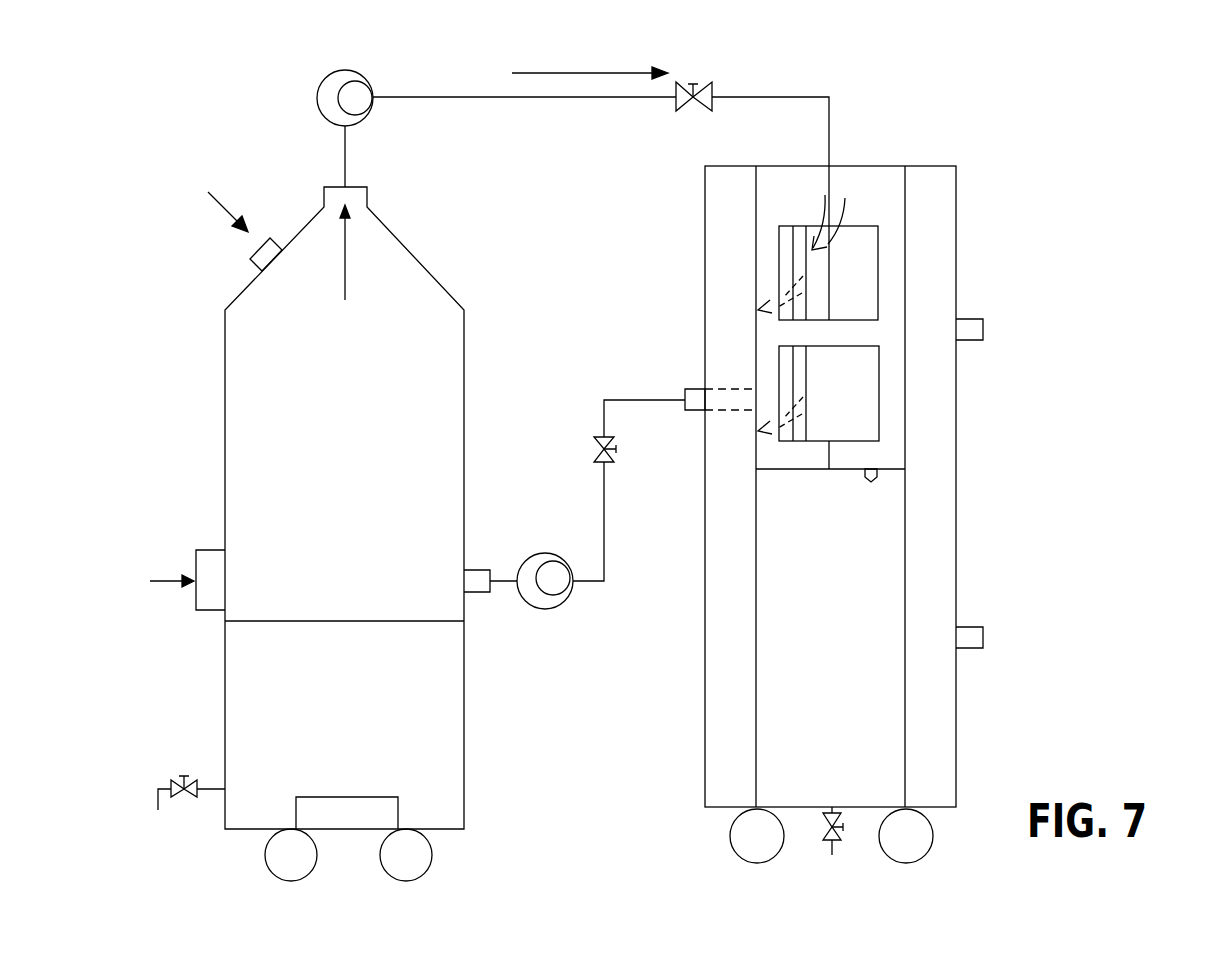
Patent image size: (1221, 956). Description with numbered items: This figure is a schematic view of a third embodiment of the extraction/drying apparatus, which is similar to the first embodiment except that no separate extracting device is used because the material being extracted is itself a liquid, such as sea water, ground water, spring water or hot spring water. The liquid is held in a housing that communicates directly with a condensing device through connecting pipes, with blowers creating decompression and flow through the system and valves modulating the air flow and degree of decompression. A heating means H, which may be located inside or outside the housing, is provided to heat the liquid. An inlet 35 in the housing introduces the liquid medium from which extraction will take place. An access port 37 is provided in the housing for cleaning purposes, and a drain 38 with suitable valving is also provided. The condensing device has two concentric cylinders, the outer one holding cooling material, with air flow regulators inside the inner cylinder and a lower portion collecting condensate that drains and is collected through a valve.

The inlet 35 is at (277, 237).
The access port 37 is at (210, 548).
The drain 38 is at (158, 808).
The heating means H is at (358, 797).